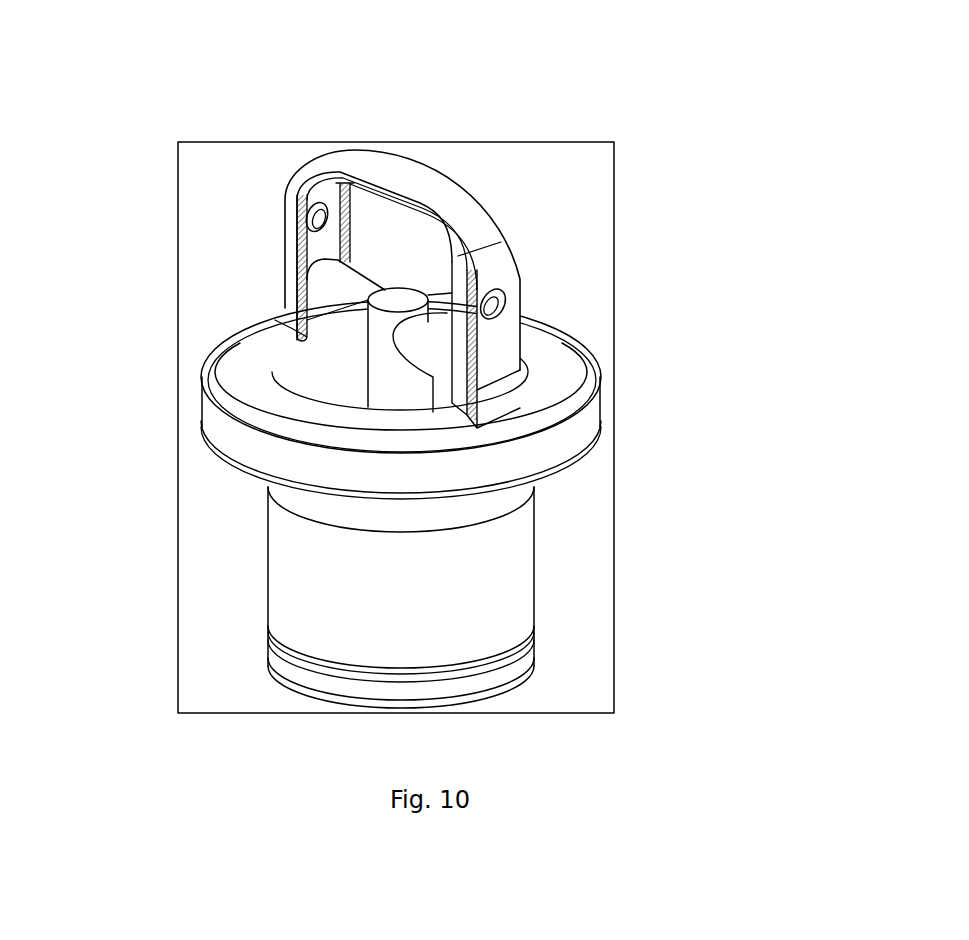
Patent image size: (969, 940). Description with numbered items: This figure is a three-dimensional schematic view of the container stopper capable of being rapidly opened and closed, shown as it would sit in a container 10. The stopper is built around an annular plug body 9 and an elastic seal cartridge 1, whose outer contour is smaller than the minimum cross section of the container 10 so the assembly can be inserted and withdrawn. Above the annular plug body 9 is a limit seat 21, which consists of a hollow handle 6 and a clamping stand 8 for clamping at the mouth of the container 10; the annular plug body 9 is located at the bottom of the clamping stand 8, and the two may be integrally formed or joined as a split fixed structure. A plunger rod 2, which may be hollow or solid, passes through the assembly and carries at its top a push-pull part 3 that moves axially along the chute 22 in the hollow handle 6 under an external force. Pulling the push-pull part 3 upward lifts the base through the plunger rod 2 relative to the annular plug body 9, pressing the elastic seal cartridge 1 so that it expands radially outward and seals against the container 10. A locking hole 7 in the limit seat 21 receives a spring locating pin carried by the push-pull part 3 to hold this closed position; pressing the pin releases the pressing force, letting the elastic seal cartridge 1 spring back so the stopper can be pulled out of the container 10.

The elastic seal cartridge 1 is at (507, 582).
The plunger rod 2 is at (387, 382).
The push-pull part 3 is at (352, 298).
The hollow handle 6 is at (443, 190).
The locking hole 7 is at (518, 283).
The clamping stand 8 is at (597, 371).
The annular plug body 9 is at (471, 508).
The container 10 is at (478, 680).
The limit seat 21 is at (268, 350).
The chute 22 is at (327, 243).